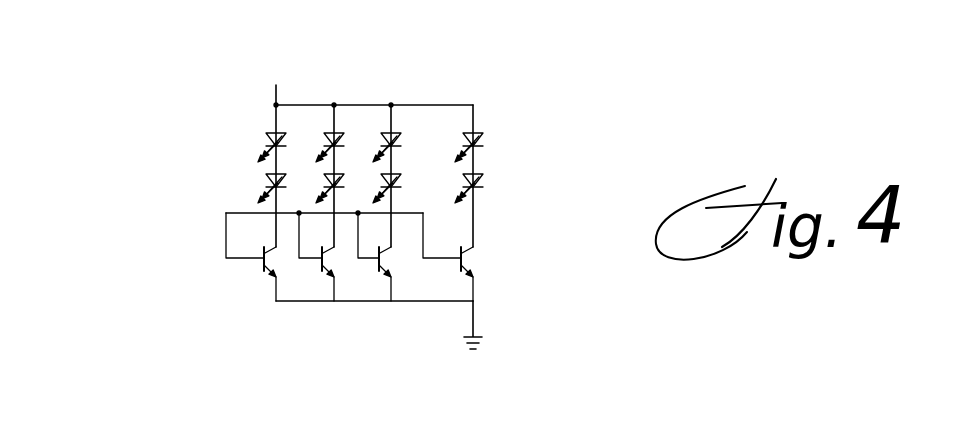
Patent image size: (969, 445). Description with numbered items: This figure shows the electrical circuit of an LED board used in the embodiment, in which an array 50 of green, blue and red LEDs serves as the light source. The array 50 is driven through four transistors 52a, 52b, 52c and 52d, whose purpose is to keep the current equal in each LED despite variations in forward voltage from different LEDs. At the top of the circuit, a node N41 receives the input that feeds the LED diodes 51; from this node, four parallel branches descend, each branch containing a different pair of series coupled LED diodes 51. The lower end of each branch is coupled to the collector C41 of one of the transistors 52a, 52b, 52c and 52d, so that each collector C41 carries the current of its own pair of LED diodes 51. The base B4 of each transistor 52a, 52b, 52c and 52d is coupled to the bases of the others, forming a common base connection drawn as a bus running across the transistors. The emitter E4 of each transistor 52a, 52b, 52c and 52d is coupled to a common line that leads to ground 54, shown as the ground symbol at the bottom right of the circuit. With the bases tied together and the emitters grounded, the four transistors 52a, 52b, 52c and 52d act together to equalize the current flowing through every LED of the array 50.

The node N41 is at (270, 106).
The LED array 50 is at (430, 130).
The series coupled LED diodes 51 is at (498, 113).
The collector C41 is at (473, 222).
The emitter E4 is at (476, 279).
The transistor 52a is at (265, 262).
The transistor 52b is at (313, 275).
The transistor 52c is at (368, 283).
The transistor 52d is at (459, 278).
The base B4 is at (440, 258).
The ground 54 is at (471, 338).